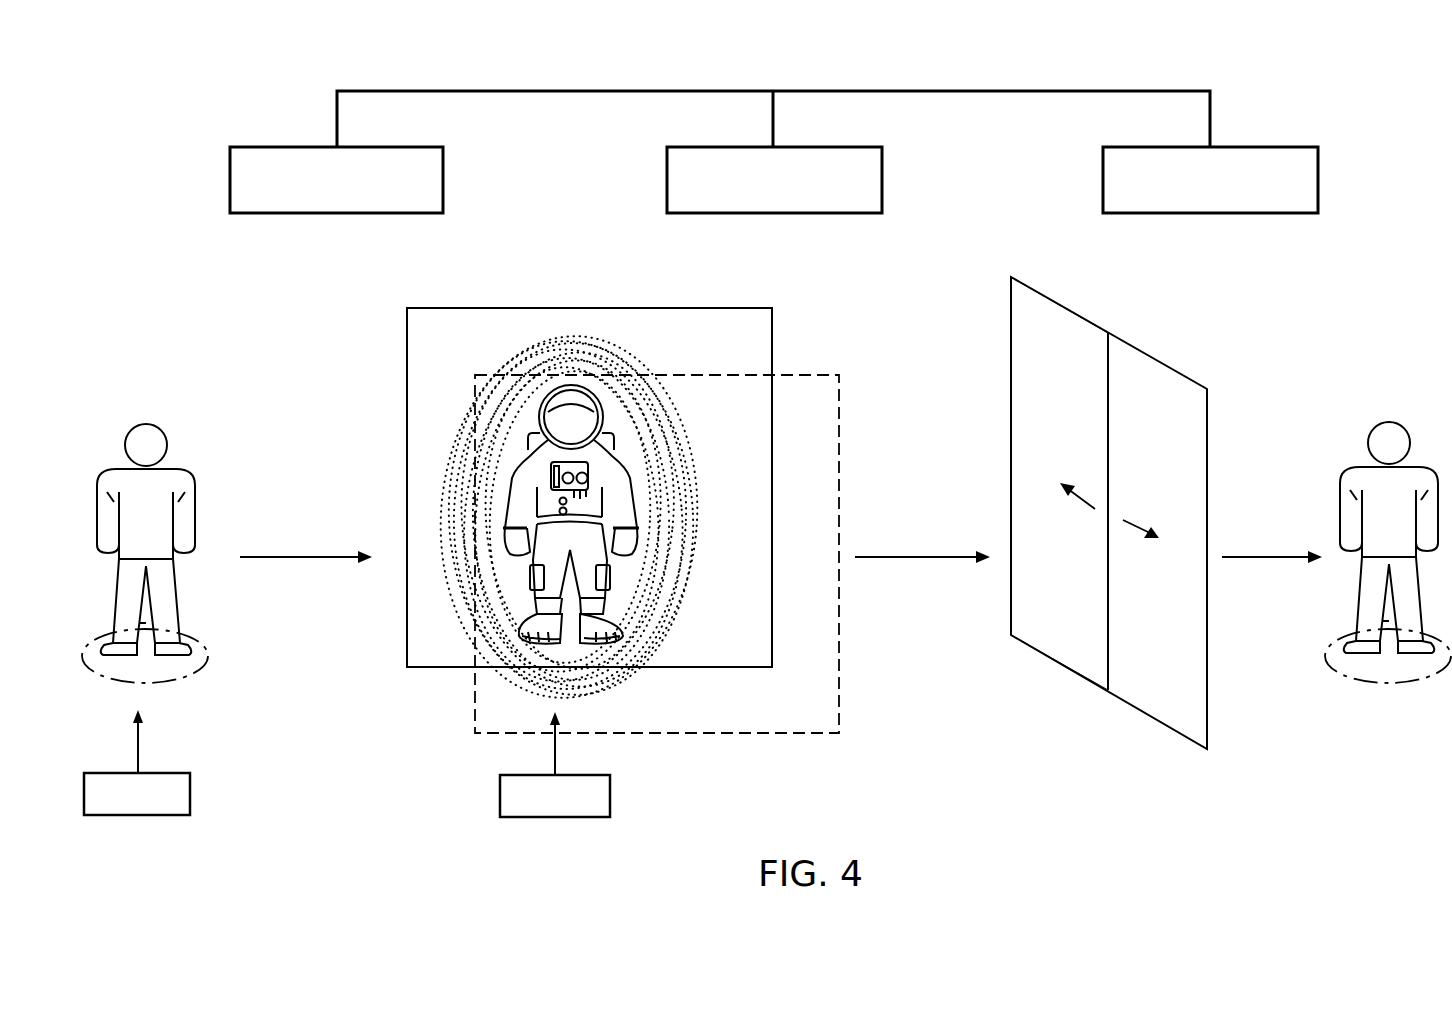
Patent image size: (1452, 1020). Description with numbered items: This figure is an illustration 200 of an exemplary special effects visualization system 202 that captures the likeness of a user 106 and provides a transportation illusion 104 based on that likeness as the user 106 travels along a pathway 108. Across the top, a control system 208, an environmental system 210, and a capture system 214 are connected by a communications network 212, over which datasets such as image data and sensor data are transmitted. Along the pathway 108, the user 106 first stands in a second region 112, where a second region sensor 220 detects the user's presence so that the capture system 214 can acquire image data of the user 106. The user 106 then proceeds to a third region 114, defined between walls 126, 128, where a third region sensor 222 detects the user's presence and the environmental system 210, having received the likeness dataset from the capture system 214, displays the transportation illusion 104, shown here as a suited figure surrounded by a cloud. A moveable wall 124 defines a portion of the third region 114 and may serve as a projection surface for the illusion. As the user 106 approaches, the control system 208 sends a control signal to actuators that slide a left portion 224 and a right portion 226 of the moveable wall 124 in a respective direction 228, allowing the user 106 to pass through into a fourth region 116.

The transportation illusion 104 is at (633, 478).
The user 106 is at (146, 422).
The pathway 108 is at (258, 556).
The second region 112 is at (199, 664).
The third region 114 is at (795, 326).
The fourth region 116 is at (1357, 664).
The moveable wall 124 is at (1068, 293).
The wall 126 is at (806, 375).
The wall 128 is at (590, 308).
The illustration 200 is at (1398, 192).
The special effects visualization system 202 is at (193, 95).
The control system 208 is at (1263, 213).
The environmental system 210 is at (830, 213).
The communications network 212 is at (561, 91).
The capture system 214 is at (395, 213).
The second region sensor 220 is at (190, 795).
The third region sensor 222 is at (610, 796).
The left portion 224 is at (1027, 350).
The right portion 226 is at (1161, 700).
The direction 228 is at (1090, 508).